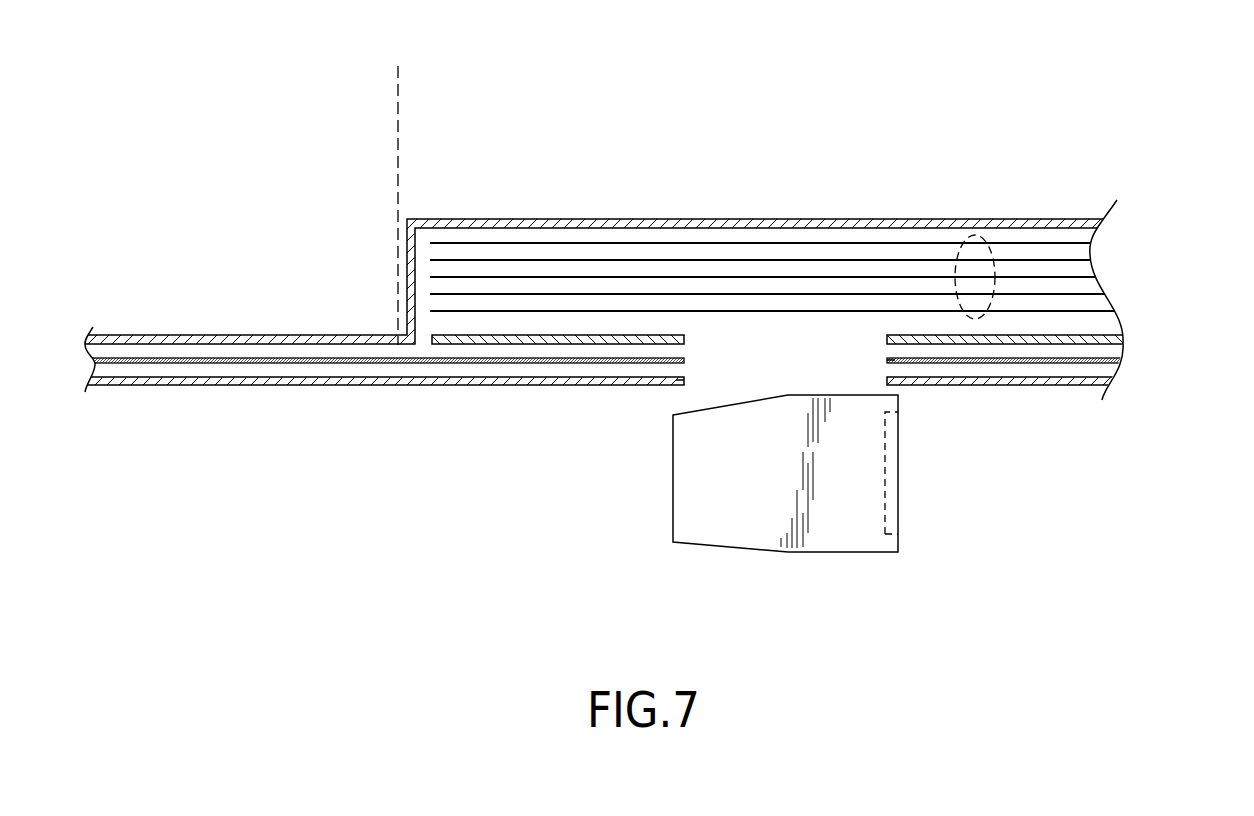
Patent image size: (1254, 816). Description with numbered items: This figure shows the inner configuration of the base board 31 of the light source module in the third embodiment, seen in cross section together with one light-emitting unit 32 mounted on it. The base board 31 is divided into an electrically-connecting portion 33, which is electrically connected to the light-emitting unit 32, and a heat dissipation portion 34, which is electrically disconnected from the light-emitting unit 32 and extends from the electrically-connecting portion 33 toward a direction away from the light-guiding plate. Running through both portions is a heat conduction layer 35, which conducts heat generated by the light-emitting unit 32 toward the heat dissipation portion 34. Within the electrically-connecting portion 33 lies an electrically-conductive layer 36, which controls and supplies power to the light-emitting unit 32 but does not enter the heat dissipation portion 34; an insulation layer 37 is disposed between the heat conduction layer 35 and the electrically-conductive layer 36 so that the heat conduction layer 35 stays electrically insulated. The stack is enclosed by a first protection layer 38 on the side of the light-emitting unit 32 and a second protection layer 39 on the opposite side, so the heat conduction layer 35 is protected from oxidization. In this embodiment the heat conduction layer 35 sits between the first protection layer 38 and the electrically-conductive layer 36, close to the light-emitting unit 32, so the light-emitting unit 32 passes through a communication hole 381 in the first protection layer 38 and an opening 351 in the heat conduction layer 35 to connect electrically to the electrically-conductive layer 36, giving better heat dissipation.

The base board 31 is at (1122, 285).
The light-emitting unit 32 is at (842, 523).
The electrically-connecting portion 33 is at (1092, 205).
The heat dissipation portion 34 is at (388, 322).
The heat conduction layer 35 is at (223, 362).
The electrically-conductive layer 36 is at (997, 283).
The insulation layer 37 is at (1107, 338).
The first protection layer 38 is at (498, 380).
The second protection layer 39 is at (1093, 223).
The opening 351 is at (887, 362).
The communication hole 381 is at (688, 384).